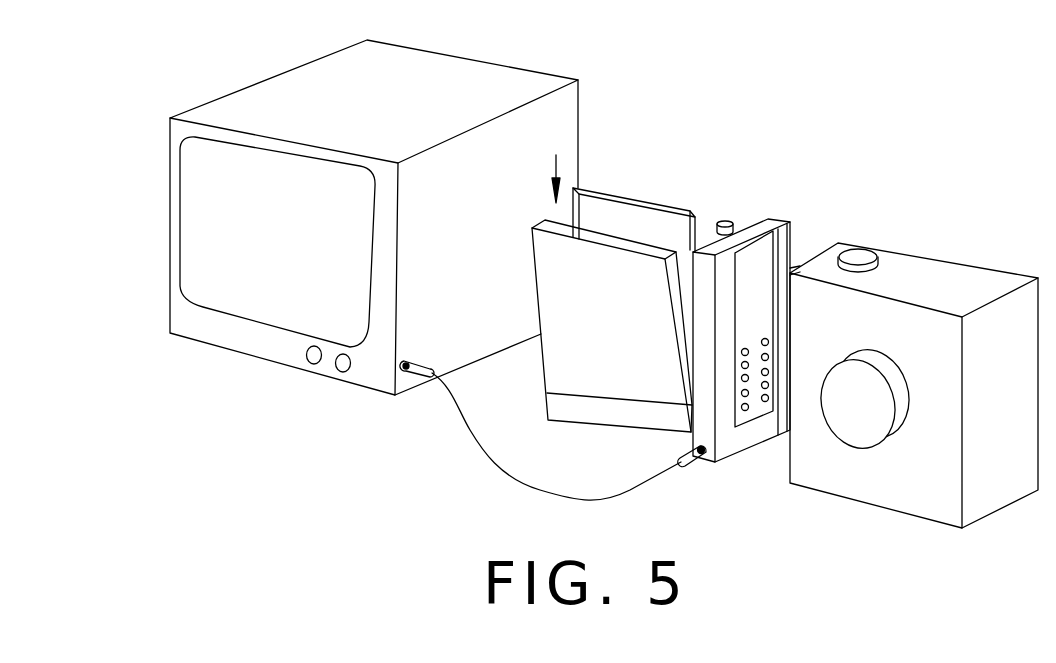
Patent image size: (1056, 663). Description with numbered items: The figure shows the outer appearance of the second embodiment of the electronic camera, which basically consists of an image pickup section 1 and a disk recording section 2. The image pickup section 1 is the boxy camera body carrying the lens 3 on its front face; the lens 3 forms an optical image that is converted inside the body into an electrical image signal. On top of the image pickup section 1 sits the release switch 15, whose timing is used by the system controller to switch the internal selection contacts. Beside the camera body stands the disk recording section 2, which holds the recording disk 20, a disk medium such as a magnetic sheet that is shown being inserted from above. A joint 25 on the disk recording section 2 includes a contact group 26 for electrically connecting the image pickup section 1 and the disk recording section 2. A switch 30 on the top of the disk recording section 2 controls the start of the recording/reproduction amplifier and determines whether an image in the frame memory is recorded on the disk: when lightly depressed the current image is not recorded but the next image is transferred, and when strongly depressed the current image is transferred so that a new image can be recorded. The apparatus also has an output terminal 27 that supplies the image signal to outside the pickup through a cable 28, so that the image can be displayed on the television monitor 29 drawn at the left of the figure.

The image pickup section 1 is at (914, 378).
The disk recording section 2 is at (746, 339).
The lens 3 is at (862, 423).
The release switch 15 is at (862, 254).
The recording disk 20 is at (627, 190).
The joint 25 is at (762, 403).
The contact group 26 is at (749, 381).
The output terminal 27 is at (685, 465).
The cable 28 is at (462, 405).
The television monitor 29 is at (532, 80).
The switch 30 is at (727, 219).